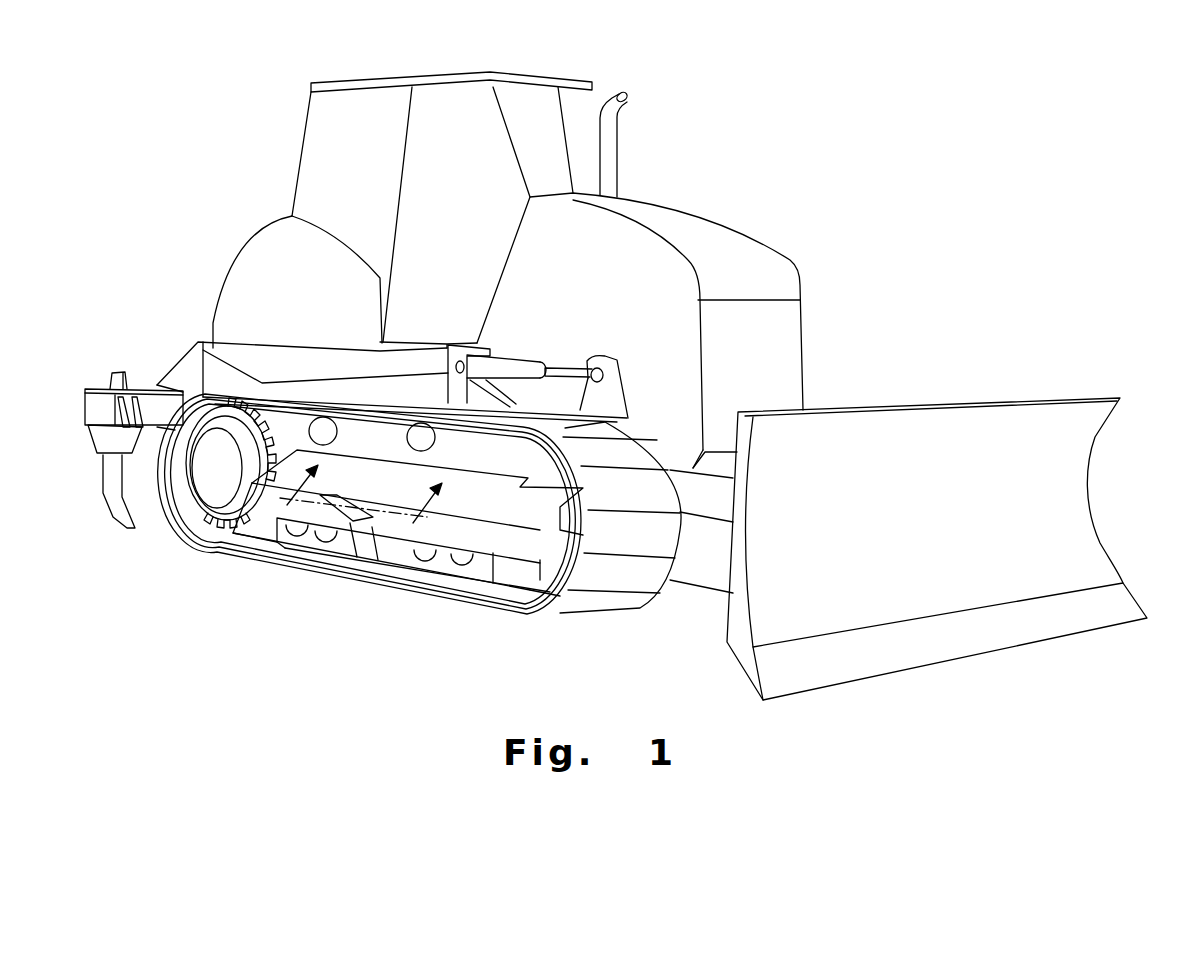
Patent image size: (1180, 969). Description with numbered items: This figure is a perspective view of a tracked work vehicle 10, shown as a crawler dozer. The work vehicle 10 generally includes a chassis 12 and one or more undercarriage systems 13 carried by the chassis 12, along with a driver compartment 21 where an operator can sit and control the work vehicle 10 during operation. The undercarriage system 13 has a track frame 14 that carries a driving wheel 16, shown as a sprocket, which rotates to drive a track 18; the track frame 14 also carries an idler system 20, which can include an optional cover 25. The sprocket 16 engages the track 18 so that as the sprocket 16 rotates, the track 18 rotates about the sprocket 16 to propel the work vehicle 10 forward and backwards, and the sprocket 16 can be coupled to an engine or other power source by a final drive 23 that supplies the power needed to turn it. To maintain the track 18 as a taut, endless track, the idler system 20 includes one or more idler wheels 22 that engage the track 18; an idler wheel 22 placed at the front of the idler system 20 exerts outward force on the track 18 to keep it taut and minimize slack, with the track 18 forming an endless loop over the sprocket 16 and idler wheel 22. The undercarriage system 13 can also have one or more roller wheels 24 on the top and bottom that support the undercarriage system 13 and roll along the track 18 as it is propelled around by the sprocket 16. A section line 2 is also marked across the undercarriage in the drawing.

The tracked work vehicle 10 is at (724, 158).
The chassis 12 is at (635, 297).
The undercarriage system 13 is at (378, 612).
The track frame 14 is at (390, 523).
The driving wheel 16 is at (273, 423).
The track 18 is at (580, 602).
The idler system 20 is at (483, 505).
The driver compartment 21 is at (467, 143).
The idler wheel 22 is at (558, 478).
The final drive 23 is at (217, 495).
The roller wheel 24 is at (410, 427).
The cover 25 is at (525, 538).
The section line 2- 2 is at (355, 498).